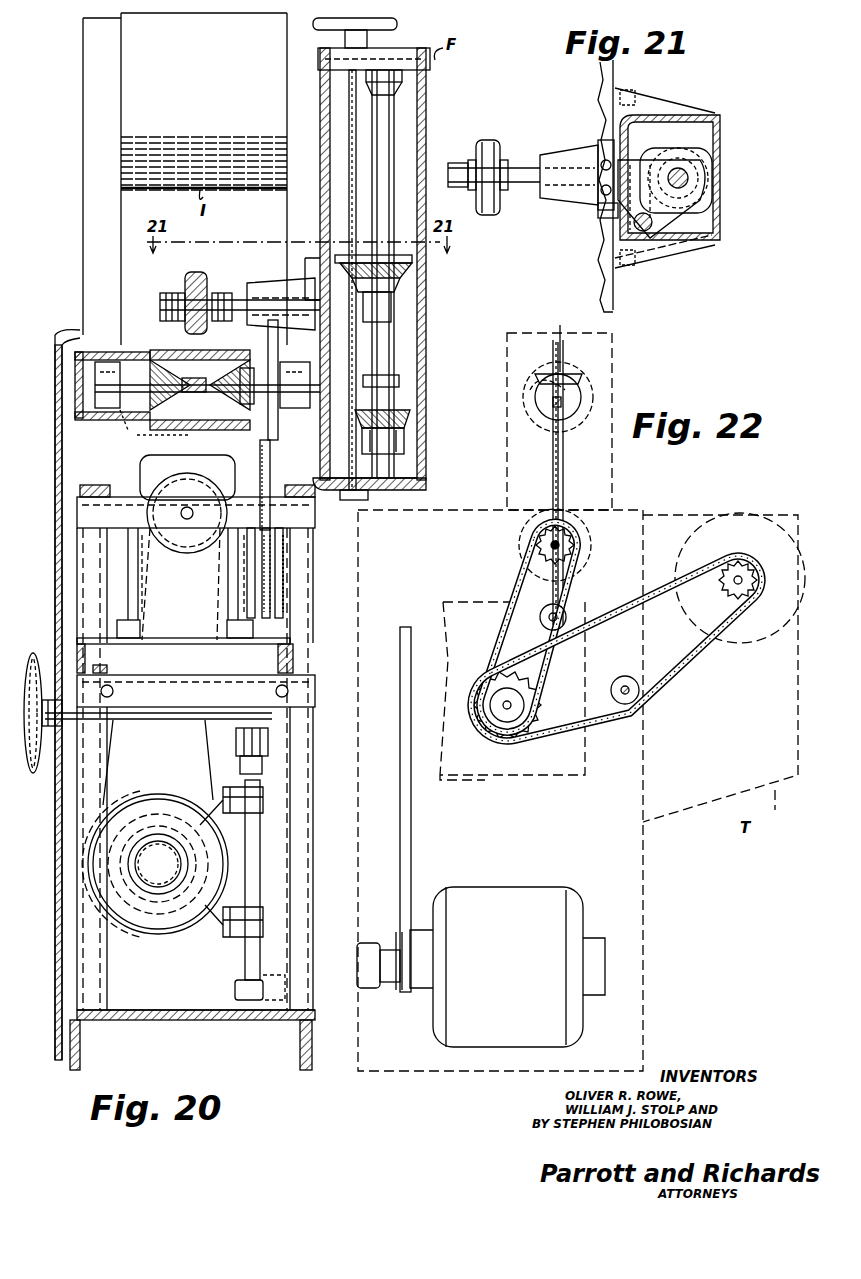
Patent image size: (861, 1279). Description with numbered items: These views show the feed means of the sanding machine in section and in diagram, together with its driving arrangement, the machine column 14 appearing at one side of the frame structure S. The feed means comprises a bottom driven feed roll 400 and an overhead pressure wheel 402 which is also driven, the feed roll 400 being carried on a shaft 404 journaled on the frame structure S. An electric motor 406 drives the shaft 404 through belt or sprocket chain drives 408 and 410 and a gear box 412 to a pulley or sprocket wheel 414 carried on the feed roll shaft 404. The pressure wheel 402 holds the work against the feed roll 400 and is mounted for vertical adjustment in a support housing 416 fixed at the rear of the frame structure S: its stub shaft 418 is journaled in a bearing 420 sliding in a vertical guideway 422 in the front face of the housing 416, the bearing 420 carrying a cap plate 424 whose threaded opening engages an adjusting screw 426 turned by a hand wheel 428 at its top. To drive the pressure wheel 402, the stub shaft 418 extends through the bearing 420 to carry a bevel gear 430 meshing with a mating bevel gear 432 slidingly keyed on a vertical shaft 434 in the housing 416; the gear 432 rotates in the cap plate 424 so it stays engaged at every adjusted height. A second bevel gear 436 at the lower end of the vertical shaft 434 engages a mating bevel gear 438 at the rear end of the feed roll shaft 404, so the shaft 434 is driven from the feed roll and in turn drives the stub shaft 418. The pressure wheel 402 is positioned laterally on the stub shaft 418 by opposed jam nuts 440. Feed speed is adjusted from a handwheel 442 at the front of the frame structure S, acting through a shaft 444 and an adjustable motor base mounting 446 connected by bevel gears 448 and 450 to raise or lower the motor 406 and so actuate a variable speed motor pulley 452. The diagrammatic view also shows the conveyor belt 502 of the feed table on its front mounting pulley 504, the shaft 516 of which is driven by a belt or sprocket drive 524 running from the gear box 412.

In FIG. 20, the column 14 is at (83, 81).
In FIG. 20, the frame structure S is at (55, 448).
In FIG. 21, the frame structure S is at (600, 262).
In FIG. 22, the frame structure S is at (643, 885).
In FIG. 20, the bottom driven feed roll 400 is at (155, 352).
In FIG. 22, the bottom driven feed roll 400 is at (520, 538).
In FIG. 20, the overhead pressure wheel 402 is at (198, 272).
In FIG. 21, the overhead pressure wheel 402 is at (487, 140).
In FIG. 22, the overhead pressure wheel 402 is at (545, 380).
In FIG. 20, the bottom feed roll shaft 404 is at (135, 416).
In FIG. 22, the bottom feed roll shaft 404 is at (560, 555).
In FIG. 20, the electric motor 406 is at (160, 942).
In FIG. 22, the electric motor 406 is at (510, 887).
In FIG. 20, the belt or sprocket chain drive 408 is at (135, 750).
In FIG. 22, the belt or sprocket chain drive 408 is at (411, 820).
In FIG. 20, the belt or sprocket chain drive 410 is at (258, 440).
In FIG. 22, the belt or sprocket chain drive 410 is at (522, 582).
In FIG. 20, the gear box 412 is at (142, 466).
In FIG. 22, the gear box 412 is at (455, 606).
In FIG. 22, the pulley or sprocket wheel 414 is at (580, 540).
In FIG. 20, the support housing 416 is at (424, 333).
In FIG. 21, the support housing 416 is at (660, 118).
In FIG. 22, the support housing 416 is at (612, 350).
In FIG. 20, the stub shaft 418 is at (228, 297).
In FIG. 21, the stub shaft 418 is at (522, 188).
In FIG. 22, the stub shaft 418 is at (565, 412).
In FIG. 20, the bearing 420 is at (266, 283).
In FIG. 21, the bearing 420 is at (552, 152).
In FIG. 21, the vertical guideway 422 is at (615, 160).
In FIG. 20, the cap plate 424 is at (412, 272).
In FIG. 21, the cap plate 424 is at (668, 230).
In FIG. 20, the adjusting screw 426 is at (360, 208).
In FIG. 21, the adjusting screw 426 is at (643, 232).
In FIG. 20, the hand wheel 428 is at (390, 54).
In FIG. 20, the bevel gear 430 is at (365, 320).
In FIG. 21, the bevel gear 430 is at (675, 140).
In FIG. 22, the bevel gear 430 is at (545, 420).
In FIG. 20, the mating bevel gear 432 is at (410, 293).
In FIG. 21, the mating bevel gear 432 is at (690, 195).
In FIG. 22, the mating bevel gear 432 is at (590, 380).
In FIG. 20, the vertical shaft 434 is at (357, 366).
In FIG. 21, the vertical shaft 434 is at (688, 178).
In FIG. 22, the vertical shaft 434 is at (565, 475).
In FIG. 20, the second bevel gear 436 is at (408, 428).
In FIG. 20, the mating bevel gear 438 is at (366, 398).
In FIG. 20, the jam nuts 440 is at (168, 293).
In FIG. 20, the handwheel 442 is at (30, 670).
In FIG. 20, the shaft 444 is at (178, 720).
In FIG. 20, the adjustable motor base mounting 446 is at (260, 850).
In FIG. 20, the bevel gear 448 is at (270, 712).
In FIG. 20, the bevel gear 450 is at (236, 730).
In FIG. 22, the variable speed motor pulley 452 is at (385, 988).
In FIG. 22, the conveyor belt 502 is at (778, 650).
In FIG. 22, the front mounting pulley 504 is at (745, 525).
In FIG. 22, the shaft 516 is at (745, 570).
In FIG. 22, the belt or sprocket drive 524 is at (672, 676).